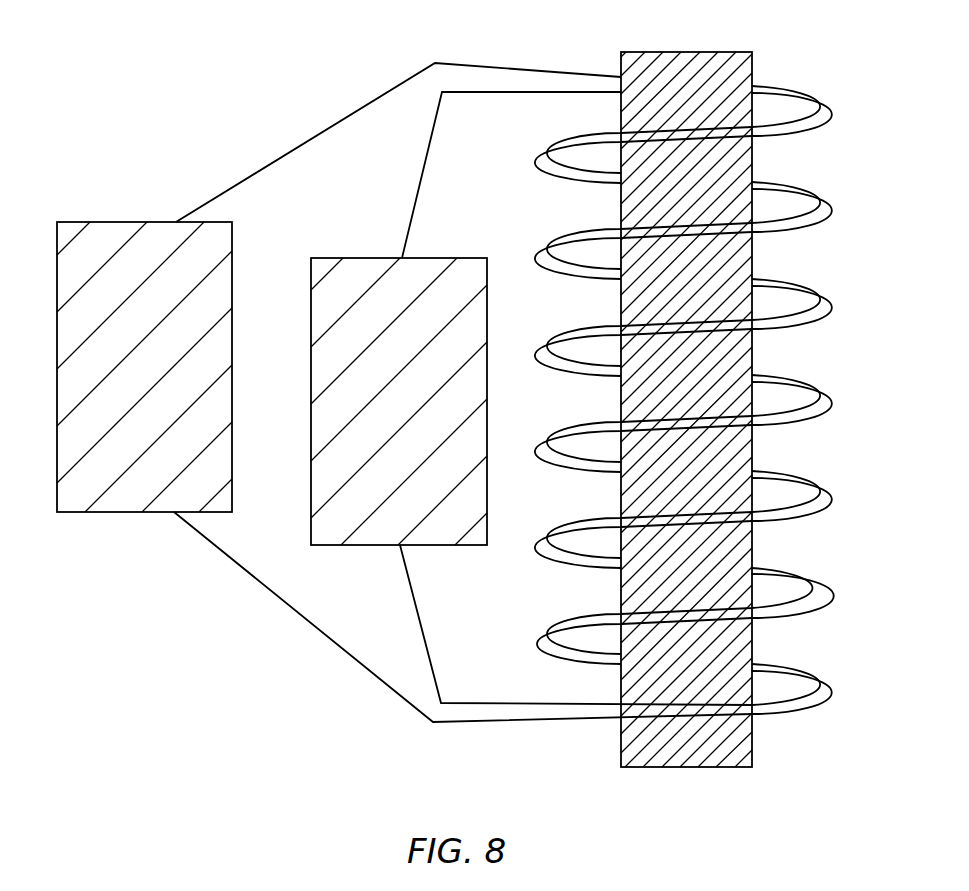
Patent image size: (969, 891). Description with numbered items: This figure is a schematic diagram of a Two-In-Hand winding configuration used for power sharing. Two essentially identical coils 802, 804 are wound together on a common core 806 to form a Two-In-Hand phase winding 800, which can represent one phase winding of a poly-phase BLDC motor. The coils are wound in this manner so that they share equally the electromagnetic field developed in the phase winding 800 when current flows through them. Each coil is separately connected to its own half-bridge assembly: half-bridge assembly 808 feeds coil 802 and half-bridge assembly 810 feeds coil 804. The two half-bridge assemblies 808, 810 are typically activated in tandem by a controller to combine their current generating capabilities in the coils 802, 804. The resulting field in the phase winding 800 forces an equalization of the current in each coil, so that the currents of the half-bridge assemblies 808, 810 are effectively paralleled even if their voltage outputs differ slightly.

The Two-In-Hand phase winding 800 is at (535, 409).
The coil 802 is at (810, 92).
The coil 804 is at (819, 128).
The common core 806 is at (752, 753).
The half-bridge assembly 808 is at (85, 222).
The half-bridge assembly 810 is at (428, 258).